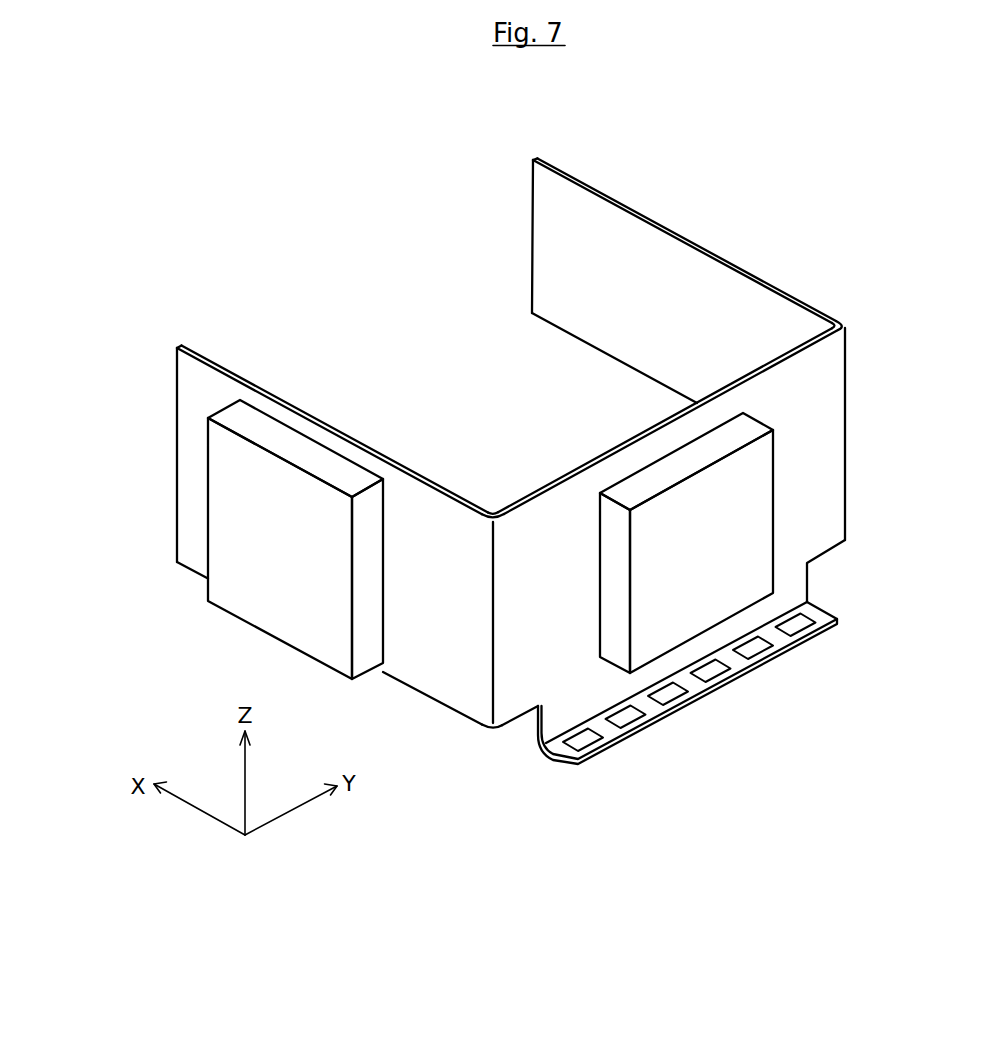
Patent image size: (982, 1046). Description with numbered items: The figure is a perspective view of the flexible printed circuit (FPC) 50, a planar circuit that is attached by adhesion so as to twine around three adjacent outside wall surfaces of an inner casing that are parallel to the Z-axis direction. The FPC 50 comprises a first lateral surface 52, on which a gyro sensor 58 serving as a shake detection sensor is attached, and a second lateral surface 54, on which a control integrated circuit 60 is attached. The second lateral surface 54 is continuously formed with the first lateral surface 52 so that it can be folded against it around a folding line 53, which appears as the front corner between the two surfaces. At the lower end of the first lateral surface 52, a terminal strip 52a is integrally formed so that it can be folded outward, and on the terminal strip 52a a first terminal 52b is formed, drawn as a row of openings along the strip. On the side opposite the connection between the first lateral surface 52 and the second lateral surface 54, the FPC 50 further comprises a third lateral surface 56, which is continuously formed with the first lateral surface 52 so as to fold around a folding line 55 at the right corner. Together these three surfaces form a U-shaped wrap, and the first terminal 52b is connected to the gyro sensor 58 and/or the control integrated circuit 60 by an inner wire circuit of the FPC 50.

The flexible printed circuit 50 is at (660, 219).
The first lateral surface 52 is at (557, 522).
The terminal strip 52a is at (563, 750).
The first terminal 52b is at (720, 672).
The folding line 53 is at (492, 642).
The second lateral surface 54 is at (193, 488).
The folding line 55 is at (847, 437).
The third lateral surface 56 is at (757, 273).
The gyro sensor 58 is at (730, 553).
The control integrated circuit 60 is at (283, 589).